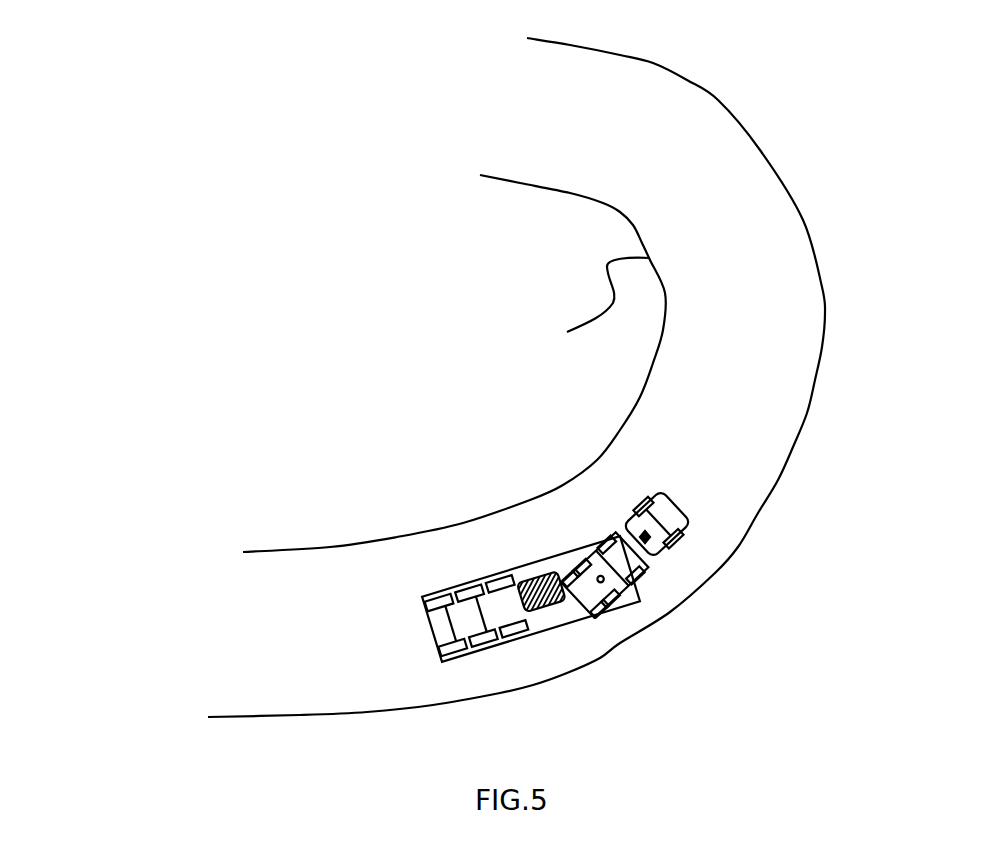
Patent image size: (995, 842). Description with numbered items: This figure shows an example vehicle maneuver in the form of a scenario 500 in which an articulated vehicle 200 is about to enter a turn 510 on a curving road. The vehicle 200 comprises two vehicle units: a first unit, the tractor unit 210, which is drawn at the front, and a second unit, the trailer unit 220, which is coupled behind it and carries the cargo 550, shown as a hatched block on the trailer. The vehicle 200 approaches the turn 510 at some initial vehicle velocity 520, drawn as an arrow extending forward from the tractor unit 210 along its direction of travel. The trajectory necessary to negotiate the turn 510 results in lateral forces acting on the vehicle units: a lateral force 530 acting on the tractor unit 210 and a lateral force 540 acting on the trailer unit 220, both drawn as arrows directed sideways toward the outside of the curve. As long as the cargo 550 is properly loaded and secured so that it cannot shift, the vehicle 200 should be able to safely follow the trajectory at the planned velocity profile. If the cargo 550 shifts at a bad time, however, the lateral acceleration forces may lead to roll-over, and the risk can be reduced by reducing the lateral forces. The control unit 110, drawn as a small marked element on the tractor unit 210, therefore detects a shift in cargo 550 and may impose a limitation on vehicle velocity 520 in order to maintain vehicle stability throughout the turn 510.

The scenario 500 is at (97, 69).
The vehicle 200 is at (712, 650).
The turn 510 is at (586, 305).
The trailer unit 220 is at (527, 567).
The cargo 550 is at (543, 579).
The lateral force on the trailer 540 is at (540, 628).
The tractor unit 210 is at (662, 490).
The control unit 110 is at (645, 541).
The initial vehicle velocity 520 is at (672, 509).
The lateral force on the tractor 530 is at (678, 544).